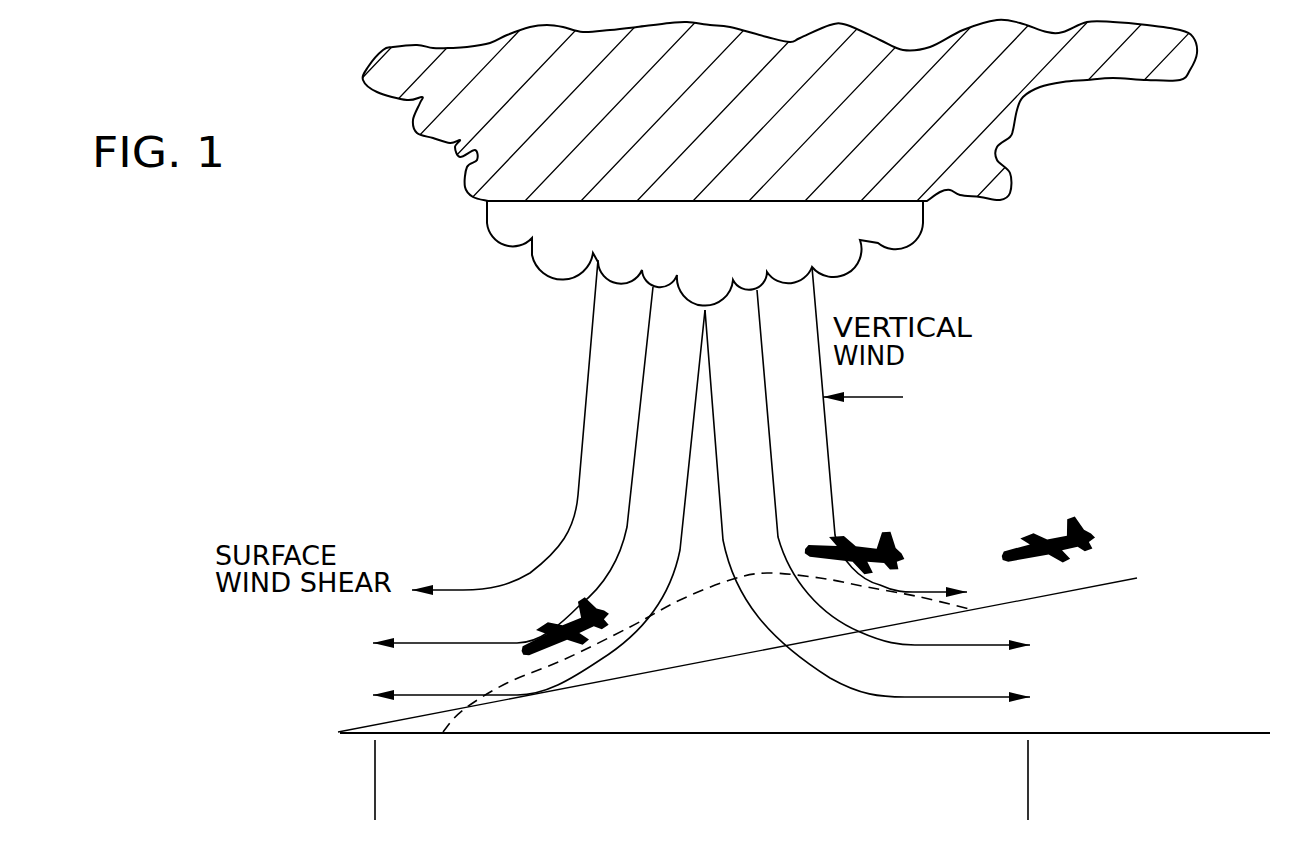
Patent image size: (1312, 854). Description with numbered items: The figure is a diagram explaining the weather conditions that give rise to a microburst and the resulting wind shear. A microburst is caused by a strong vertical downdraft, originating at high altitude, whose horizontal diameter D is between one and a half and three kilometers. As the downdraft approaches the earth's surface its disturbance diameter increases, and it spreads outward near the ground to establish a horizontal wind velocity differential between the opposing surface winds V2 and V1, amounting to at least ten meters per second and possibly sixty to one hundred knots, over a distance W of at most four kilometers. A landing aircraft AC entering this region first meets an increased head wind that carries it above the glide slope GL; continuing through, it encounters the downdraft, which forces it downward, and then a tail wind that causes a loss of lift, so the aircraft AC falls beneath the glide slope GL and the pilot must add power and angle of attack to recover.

The aircraft AC is at (563, 622).
The horizontal diameter D is at (585, 397).
The distance W is at (1028, 787).
The glide slope GL is at (769, 628).
The horizontal wind velocity V1 is at (1165, 648).
The horizontal wind velocity V2 is at (222, 643).